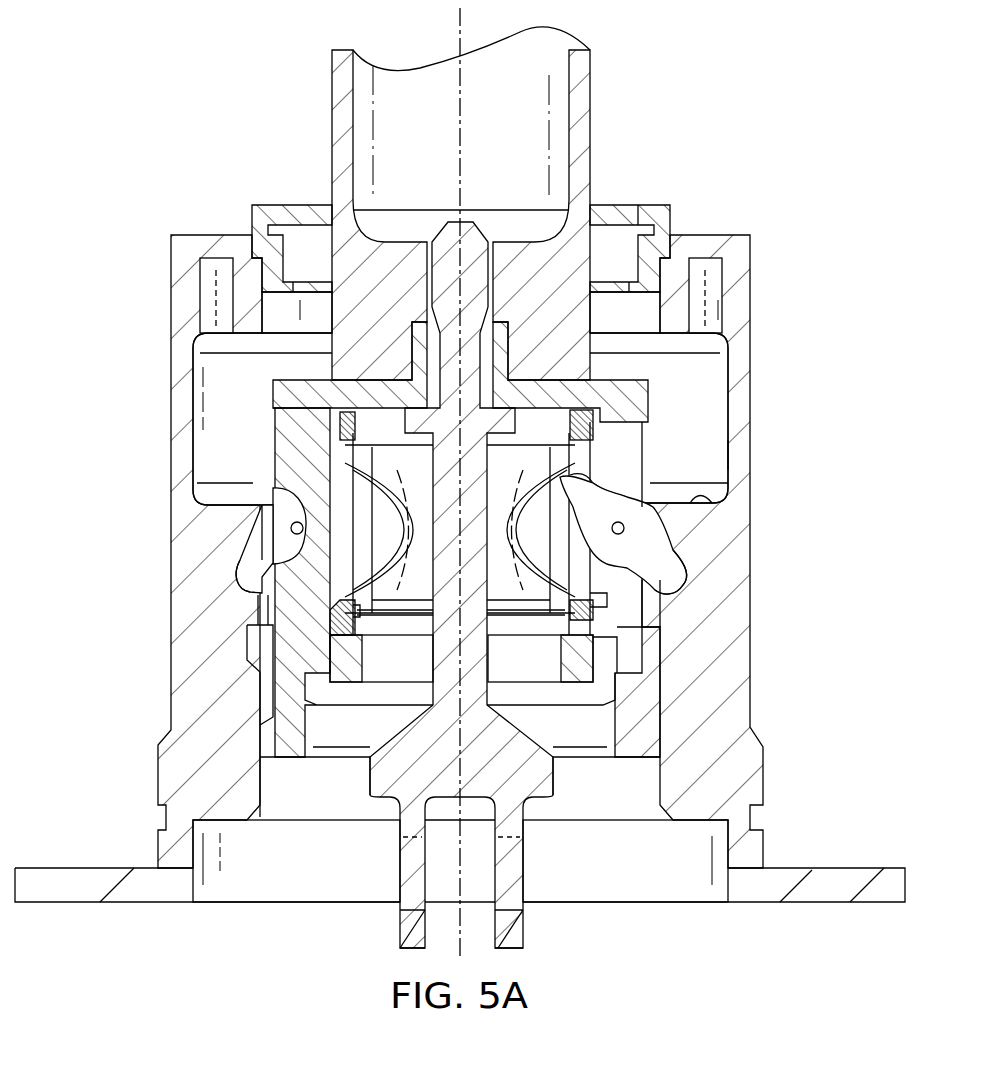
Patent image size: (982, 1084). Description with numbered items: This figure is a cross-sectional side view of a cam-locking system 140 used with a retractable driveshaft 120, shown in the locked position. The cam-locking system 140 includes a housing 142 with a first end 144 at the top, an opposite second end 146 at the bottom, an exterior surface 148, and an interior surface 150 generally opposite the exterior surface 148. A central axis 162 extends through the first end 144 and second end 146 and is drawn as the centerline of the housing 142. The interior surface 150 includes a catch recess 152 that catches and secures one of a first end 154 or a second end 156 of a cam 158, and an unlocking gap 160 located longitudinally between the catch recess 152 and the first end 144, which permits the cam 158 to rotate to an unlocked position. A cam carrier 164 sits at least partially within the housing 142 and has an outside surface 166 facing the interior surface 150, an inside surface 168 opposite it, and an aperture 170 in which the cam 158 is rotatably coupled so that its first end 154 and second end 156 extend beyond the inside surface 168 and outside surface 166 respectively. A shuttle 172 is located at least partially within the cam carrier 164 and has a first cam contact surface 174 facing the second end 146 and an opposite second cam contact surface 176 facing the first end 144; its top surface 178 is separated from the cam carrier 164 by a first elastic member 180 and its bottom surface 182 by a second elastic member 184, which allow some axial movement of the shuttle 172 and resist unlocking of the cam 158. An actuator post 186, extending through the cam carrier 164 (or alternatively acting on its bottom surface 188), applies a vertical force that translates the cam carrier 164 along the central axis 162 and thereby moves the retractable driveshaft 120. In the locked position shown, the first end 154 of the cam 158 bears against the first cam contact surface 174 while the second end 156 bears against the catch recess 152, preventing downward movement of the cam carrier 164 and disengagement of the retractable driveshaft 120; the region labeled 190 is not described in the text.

The retractable driveshaft 120 is at (332, 112).
The cam-locking system 140 is at (801, 134).
The housing 142 is at (740, 655).
The first end 144 is at (703, 233).
The second end 146 is at (120, 905).
The exterior surface 148 is at (752, 490).
The interior surface 150 is at (648, 800).
The catch recess 152 is at (692, 535).
The first end 154 is at (600, 483).
The second end 156 is at (688, 606).
The cam 158 is at (645, 512).
The unlocking gap 160 is at (712, 378).
The central axis 162 is at (458, 25).
The cam carrier 164 is at (262, 733).
The outside surface 166 is at (255, 641).
The inside surface 168 is at (318, 727).
The aperture 170 is at (608, 625).
The shuttle 172 is at (515, 608).
The first cam contact surface 174 is at (288, 500).
The second cam contact surface 176 is at (250, 556).
The top surface 178 is at (335, 440).
The first elastic member 180 is at (345, 413).
The bottom surface 182 is at (367, 617).
The second elastic member 184 is at (262, 598).
The actuator post 186 is at (398, 920).
The bottom surface 188 is at (296, 758).
The spring seat 190 is at (702, 486).